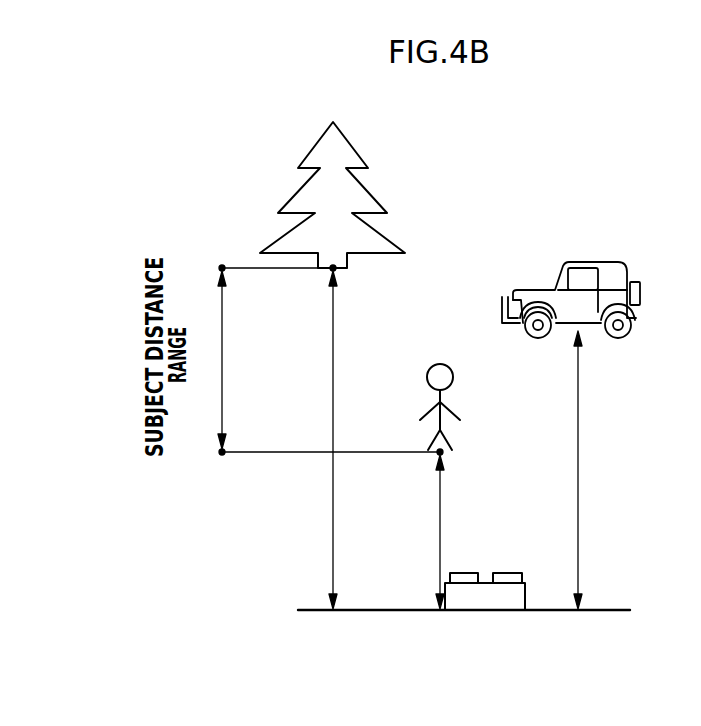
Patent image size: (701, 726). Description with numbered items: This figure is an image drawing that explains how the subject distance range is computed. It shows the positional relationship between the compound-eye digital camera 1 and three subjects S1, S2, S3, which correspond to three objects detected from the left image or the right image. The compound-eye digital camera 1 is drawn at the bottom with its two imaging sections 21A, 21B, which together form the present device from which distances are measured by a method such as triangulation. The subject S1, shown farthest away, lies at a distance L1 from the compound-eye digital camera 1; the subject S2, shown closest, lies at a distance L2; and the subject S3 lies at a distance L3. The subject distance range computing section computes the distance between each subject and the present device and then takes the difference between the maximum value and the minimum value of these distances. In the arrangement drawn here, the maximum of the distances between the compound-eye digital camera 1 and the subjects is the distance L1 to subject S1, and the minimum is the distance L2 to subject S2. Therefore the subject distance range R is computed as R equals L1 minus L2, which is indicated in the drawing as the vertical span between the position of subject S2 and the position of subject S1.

The compound-eye digital camera 1 is at (490, 602).
The imaging section 21A is at (463, 583).
The imaging section 21B is at (512, 583).
The subject S1 is at (350, 142).
The subject S2 is at (440, 362).
The subject S3 is at (608, 258).
The distance L1 is at (343, 440).
The distance L2 is at (450, 532).
The distance L3 is at (586, 470).
The subject distance range R is at (211, 360).